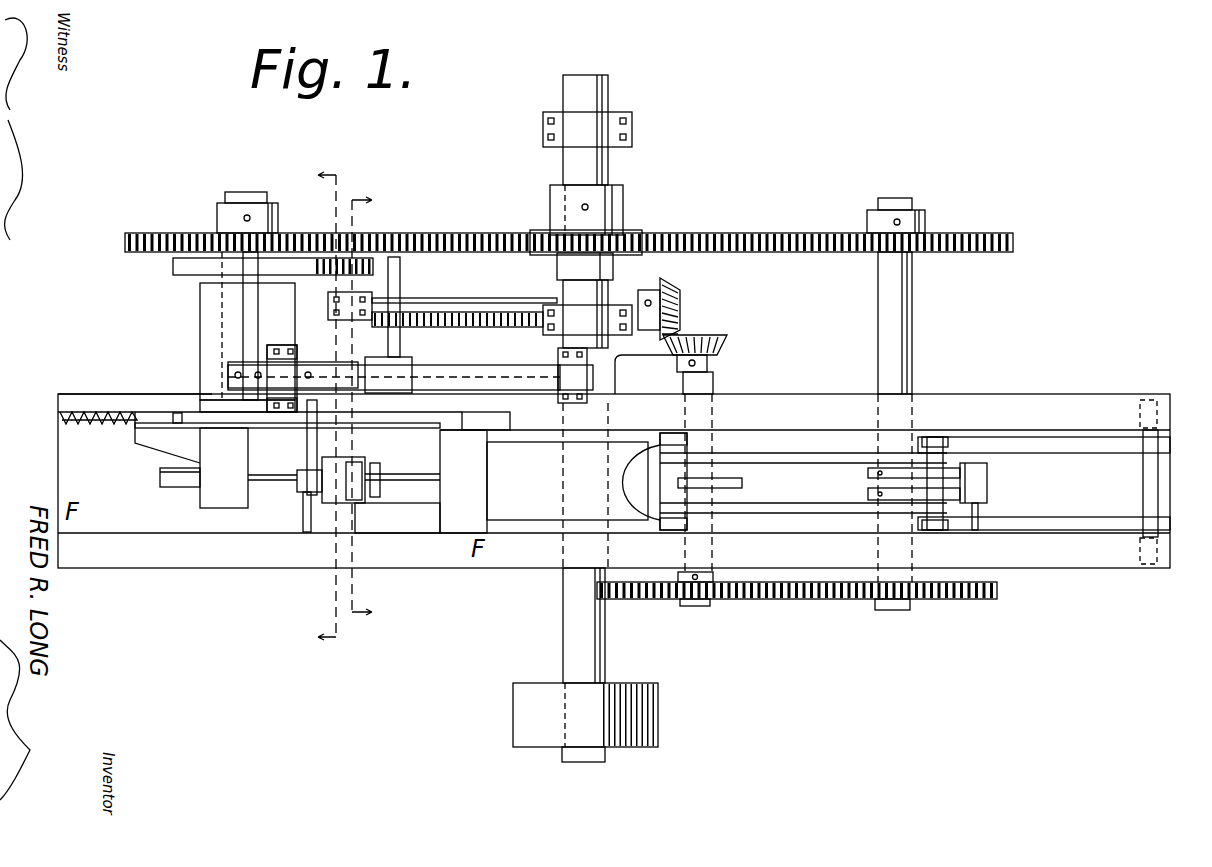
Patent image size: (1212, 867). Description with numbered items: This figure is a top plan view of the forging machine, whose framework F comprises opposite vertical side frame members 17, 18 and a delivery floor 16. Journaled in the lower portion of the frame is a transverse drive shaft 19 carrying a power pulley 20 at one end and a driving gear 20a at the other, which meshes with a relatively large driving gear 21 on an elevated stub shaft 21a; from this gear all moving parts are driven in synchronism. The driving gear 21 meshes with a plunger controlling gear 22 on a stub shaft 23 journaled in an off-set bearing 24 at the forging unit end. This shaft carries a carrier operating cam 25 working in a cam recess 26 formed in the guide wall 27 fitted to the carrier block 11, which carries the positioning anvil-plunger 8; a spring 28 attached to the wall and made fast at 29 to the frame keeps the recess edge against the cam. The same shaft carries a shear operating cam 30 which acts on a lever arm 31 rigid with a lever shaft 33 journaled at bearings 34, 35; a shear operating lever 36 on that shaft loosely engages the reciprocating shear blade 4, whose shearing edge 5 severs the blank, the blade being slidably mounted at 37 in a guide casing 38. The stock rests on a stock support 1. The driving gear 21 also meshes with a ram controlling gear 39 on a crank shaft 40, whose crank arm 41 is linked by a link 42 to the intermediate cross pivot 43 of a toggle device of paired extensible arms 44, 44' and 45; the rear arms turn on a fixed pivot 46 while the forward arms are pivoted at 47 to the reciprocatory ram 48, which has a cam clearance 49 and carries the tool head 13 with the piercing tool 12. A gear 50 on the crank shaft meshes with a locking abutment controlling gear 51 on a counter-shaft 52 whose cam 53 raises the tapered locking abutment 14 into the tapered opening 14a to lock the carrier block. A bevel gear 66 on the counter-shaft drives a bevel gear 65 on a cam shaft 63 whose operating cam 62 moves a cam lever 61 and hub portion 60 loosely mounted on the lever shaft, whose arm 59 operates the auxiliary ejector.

The stock support 1 is at (303, 516).
The reciprocating shear blade 4 is at (354, 408).
The shearing edge 5 is at (310, 407).
The positioning anvil-plunger 8 is at (270, 482).
The carrier block 11 is at (224, 468).
The piercing tool 12 is at (480, 432).
The reciprocating tool head 13 is at (463, 481).
The locking abutment 14 is at (186, 488).
The tapered opening 14a is at (158, 483).
The delivery floor 16 is at (437, 515).
The vertical side frame member 17 is at (614, 481).
The vertical side frame member 18 is at (614, 550).
The drive shaft 19 is at (608, 92).
The power pulley 20 is at (556, 722).
The driving gear 20a is at (548, 233).
The driving gear 21 is at (670, 233).
The stub shaft 21a is at (580, 178).
The plunger controlling gear 22 is at (125, 244).
The stub shaft 23 is at (242, 203).
The off-set bearing 24 is at (200, 332).
The carrier operating cam 25 is at (206, 408).
The cam recess 26 is at (180, 428).
The guide wall 27 is at (140, 395).
The spring 28 is at (128, 430).
The spring fastening 29 is at (58, 411).
The shear operating cam 30 is at (185, 268).
The lever arm 31 is at (258, 318).
The lever shaft 33 is at (475, 372).
The bearing 34 is at (288, 372).
The bearing 35 is at (565, 372).
The shear operating lever 36 is at (307, 443).
The slidable mounting 37 is at (362, 503).
The guide casing 38 is at (345, 500).
The ram controlling gear 39 is at (962, 233).
The crank shaft 40 is at (912, 324).
The crank arm 41 is at (987, 480).
The link 42 is at (975, 505).
The intermediate cross pivot 43 is at (935, 530).
The paired extensible arm 44 is at (1044, 513).
The paired extensible arm 44' is at (1044, 461).
The paired extensible arms 45 is at (866, 472).
The fixed pivot 46 is at (1158, 492).
The pivot connection 47 is at (668, 433).
The reciprocatory ram 48 is at (567, 481).
The cam clearance 49 is at (621, 499).
The gear 50 is at (912, 608).
The locking abutment controlling gear 51 is at (735, 600).
The counter-shaft 52 is at (713, 391).
The cam 53 is at (729, 487).
The lever arm 59 is at (390, 474).
The hub portion 60 is at (408, 376).
The cam lever 61 is at (400, 278).
The operating cam 62 is at (455, 298).
The cam shaft 63 is at (515, 312).
The bevel gear 65 is at (680, 292).
The bevel gear 66 is at (714, 338).